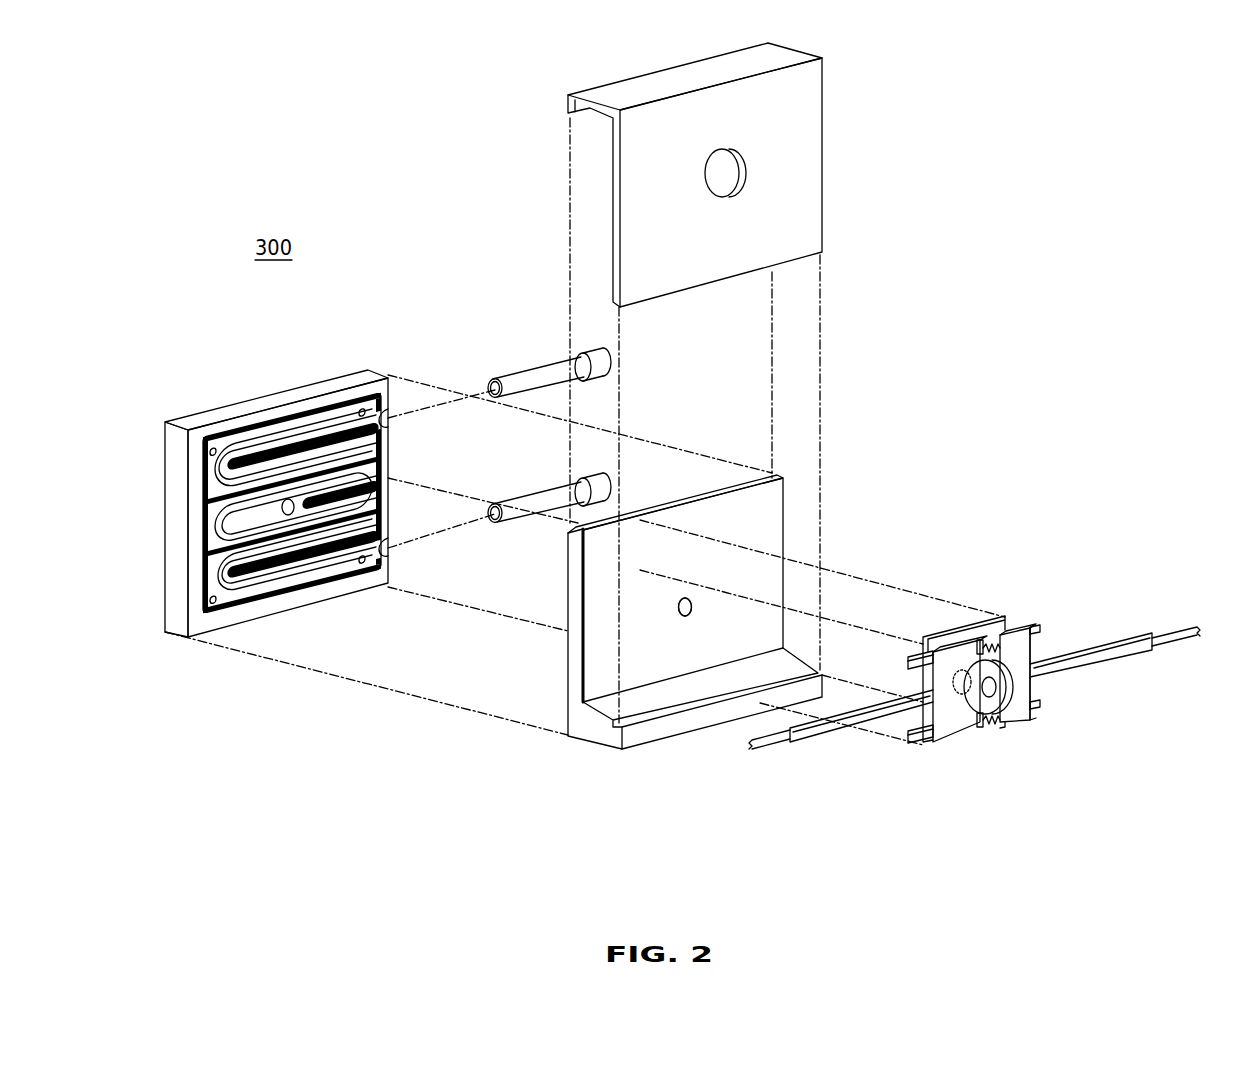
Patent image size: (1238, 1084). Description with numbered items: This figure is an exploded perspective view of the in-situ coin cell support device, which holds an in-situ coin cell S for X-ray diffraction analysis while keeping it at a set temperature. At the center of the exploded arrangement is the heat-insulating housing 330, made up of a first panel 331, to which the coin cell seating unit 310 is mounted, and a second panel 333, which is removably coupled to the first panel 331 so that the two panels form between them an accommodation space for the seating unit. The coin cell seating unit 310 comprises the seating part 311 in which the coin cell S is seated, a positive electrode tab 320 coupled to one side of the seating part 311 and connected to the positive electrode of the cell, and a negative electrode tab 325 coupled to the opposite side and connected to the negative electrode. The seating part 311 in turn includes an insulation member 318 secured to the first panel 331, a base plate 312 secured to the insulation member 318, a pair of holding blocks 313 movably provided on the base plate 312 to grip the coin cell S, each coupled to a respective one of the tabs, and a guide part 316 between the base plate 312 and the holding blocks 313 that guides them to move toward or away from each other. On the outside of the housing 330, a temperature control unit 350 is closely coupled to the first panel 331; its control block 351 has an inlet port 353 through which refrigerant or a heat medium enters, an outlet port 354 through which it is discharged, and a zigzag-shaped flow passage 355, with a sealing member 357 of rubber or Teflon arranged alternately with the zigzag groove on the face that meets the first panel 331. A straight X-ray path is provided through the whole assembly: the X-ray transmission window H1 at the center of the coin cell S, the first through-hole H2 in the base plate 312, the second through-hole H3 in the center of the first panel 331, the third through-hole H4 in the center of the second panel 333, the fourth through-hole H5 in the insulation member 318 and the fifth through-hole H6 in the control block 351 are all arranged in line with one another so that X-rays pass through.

The coin cell seating unit 310 is at (1097, 490).
The seating part 311 is at (1050, 686).
The base plate 312 is at (957, 668).
The holding blocks 313 is at (995, 643).
The guide part 316 is at (912, 737).
The insulation member 318 is at (787, 502).
The positive electrode tab 320 is at (800, 737).
The negative electrode tab 325 is at (1126, 645).
The housing 330 is at (712, 357).
The first panel 331 is at (572, 577).
The second panel 333 is at (650, 263).
The temperature control unit 350 is at (215, 402).
The control block 351 is at (169, 497).
The inlet port 353 is at (390, 418).
The outlet port 354 is at (389, 549).
The flow passage 355 is at (310, 437).
The sealing member 357 is at (214, 531).
The X-ray transmission window H1 is at (985, 692).
The first through-hole H2 is at (965, 670).
The second through-hole H3 is at (663, 603).
The third through-hole H4 is at (722, 173).
The fourth through-hole H5 is at (687, 617).
The fifth through-hole H6 is at (289, 511).
The in-situ coin cell S is at (988, 722).